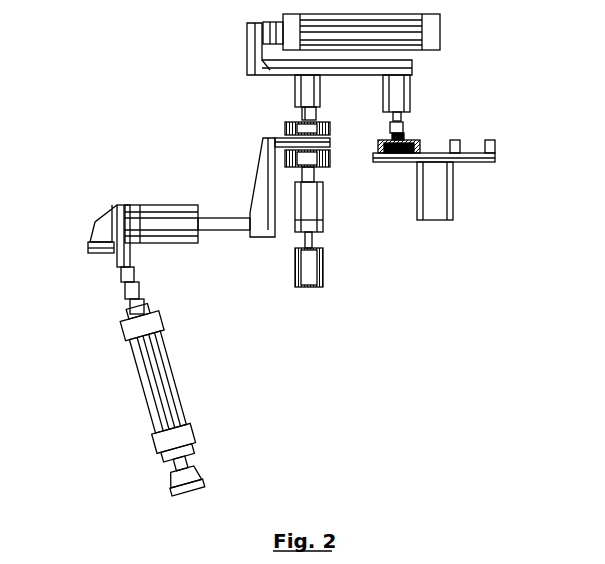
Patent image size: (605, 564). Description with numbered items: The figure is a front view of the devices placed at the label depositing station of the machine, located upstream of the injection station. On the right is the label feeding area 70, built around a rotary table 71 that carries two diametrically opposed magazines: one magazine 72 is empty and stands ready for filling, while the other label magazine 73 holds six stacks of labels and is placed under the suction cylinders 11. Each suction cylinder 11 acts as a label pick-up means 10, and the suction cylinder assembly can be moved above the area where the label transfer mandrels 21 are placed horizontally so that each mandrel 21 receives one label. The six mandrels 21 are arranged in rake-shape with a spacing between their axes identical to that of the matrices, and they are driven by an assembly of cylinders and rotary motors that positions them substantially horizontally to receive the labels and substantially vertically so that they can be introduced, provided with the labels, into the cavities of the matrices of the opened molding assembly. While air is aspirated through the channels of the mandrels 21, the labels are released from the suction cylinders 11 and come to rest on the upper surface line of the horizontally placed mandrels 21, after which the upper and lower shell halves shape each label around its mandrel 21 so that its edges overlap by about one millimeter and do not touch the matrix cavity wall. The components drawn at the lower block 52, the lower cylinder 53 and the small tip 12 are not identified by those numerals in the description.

The label pick-up means 10 is at (104, 187).
The upper clamping jaw 52 is at (285, 124).
The label transfer mandrel 21 is at (332, 142).
The actuating cylinder 53 is at (320, 170).
The suction cylinder 11 is at (403, 132).
The workpiece tip 12 is at (405, 137).
The magazine (empty, in stand-by) 72 is at (470, 150).
The label magazine 73 is at (393, 150).
The rotary table 71 is at (440, 186).
The label feeding area 70 is at (446, 180).